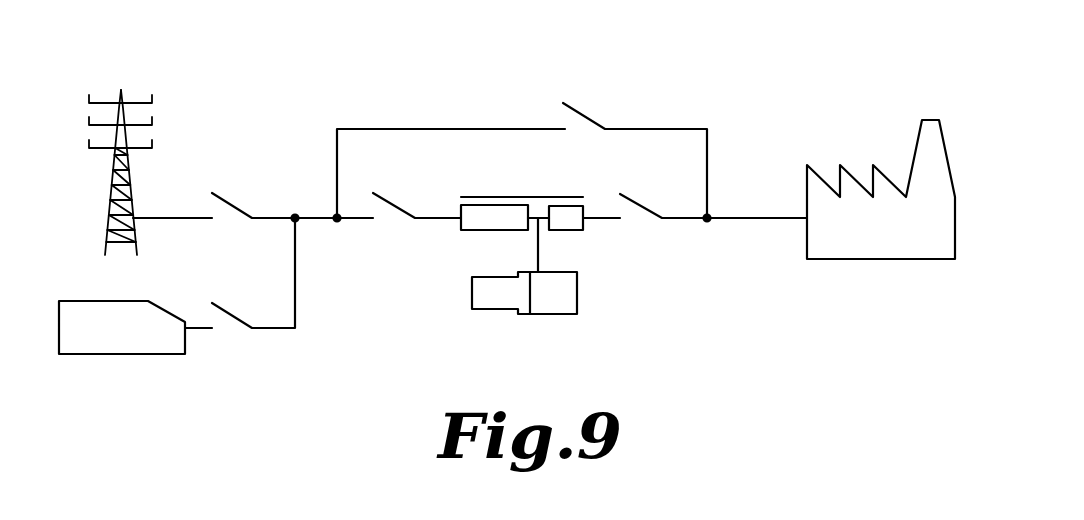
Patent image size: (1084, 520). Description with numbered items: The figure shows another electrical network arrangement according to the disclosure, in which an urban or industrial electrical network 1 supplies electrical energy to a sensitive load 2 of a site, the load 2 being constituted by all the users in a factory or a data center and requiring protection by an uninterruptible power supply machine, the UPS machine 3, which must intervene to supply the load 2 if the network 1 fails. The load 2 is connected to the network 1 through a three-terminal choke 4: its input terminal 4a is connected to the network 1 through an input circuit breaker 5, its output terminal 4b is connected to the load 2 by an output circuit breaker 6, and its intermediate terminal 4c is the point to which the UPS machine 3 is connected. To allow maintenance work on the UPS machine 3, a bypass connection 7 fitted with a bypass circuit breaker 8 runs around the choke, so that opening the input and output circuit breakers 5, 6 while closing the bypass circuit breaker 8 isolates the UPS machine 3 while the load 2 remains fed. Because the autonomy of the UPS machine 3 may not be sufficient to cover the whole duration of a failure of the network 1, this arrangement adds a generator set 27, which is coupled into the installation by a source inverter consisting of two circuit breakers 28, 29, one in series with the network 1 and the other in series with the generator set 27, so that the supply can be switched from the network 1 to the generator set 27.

The electrical network 1 is at (110, 203).
The sensitive load 2 is at (880, 205).
The UPS machine 3 is at (512, 302).
The three-terminal choke 4 is at (526, 159).
The input terminal 4a is at (445, 220).
The output terminal 4b is at (603, 222).
The intermediate terminal 4c is at (537, 220).
The input circuit breaker 5 is at (395, 205).
The output circuit breaker 6 is at (643, 210).
The bypass connection 7 is at (393, 129).
The bypass circuit breaker 8 is at (577, 112).
The generator set 27 is at (113, 338).
The circuit breaker 28 is at (232, 205).
The circuit breaker 29 is at (232, 318).